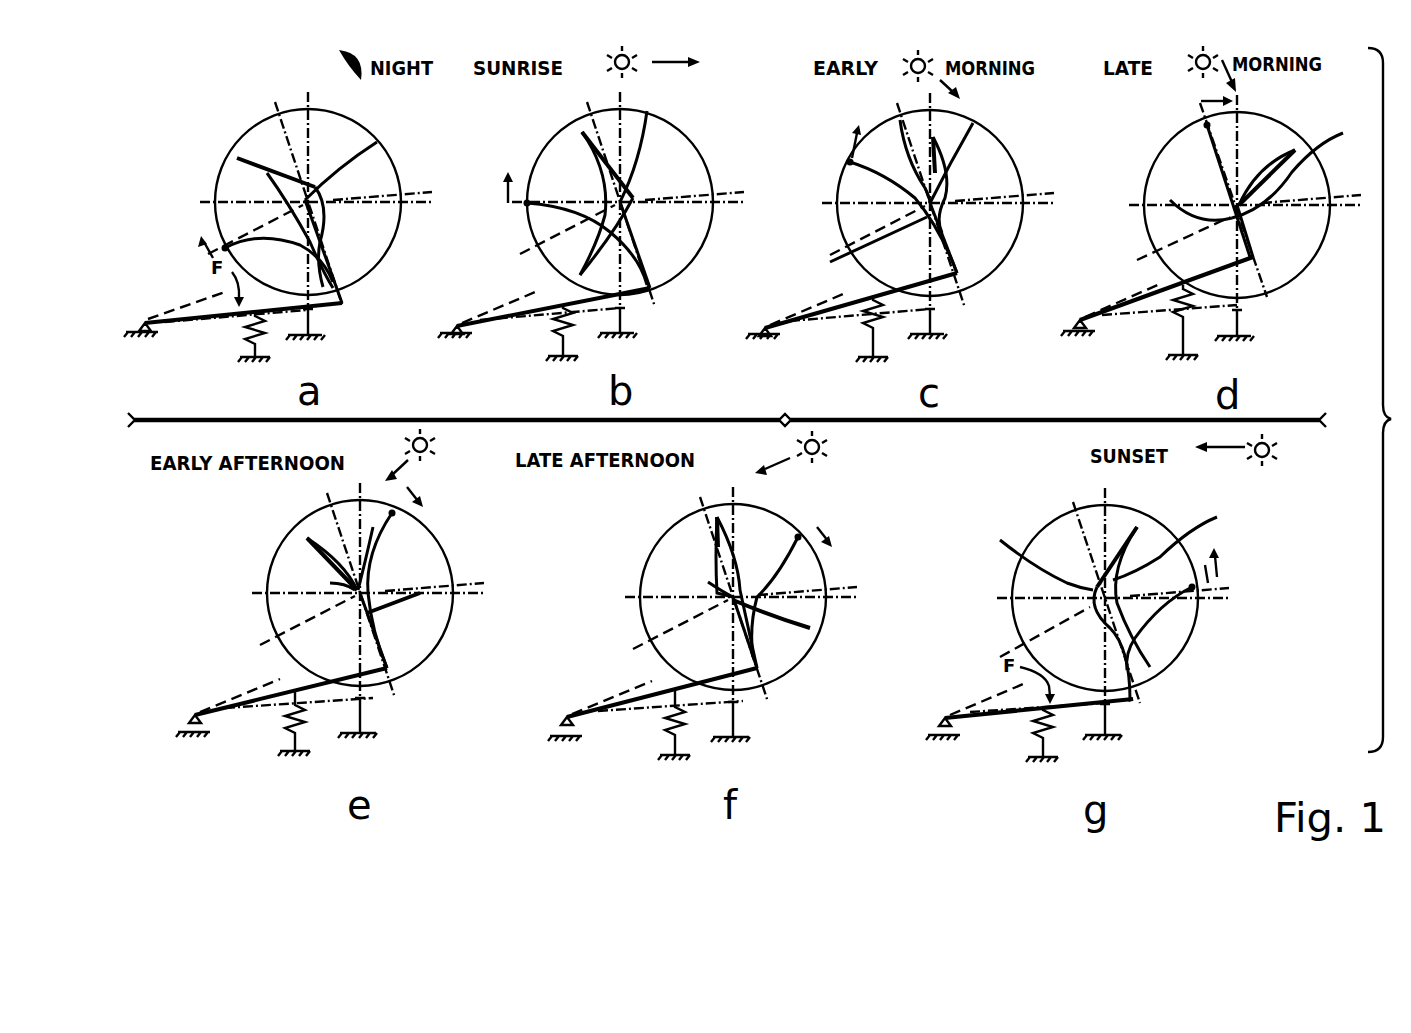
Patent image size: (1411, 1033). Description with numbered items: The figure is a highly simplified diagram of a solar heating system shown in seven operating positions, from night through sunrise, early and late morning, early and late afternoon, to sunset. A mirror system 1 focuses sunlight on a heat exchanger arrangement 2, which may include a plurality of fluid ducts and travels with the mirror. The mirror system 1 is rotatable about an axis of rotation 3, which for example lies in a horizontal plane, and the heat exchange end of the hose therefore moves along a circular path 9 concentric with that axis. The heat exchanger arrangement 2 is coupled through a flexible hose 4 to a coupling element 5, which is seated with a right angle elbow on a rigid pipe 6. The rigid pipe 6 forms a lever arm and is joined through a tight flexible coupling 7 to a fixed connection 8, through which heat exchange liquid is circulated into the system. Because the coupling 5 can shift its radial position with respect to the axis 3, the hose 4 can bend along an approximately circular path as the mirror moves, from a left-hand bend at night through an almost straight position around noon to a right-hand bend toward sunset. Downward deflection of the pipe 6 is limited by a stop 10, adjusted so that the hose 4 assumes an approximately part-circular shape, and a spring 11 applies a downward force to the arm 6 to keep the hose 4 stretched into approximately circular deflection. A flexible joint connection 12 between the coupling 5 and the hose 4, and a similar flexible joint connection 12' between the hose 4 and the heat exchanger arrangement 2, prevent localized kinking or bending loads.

The mirror system 1 is at (748, 352).
The heat exchanger arrangement 2 is at (706, 379).
The axis of rotation 3 is at (784, 335).
The flexible hose 4 is at (734, 413).
The coupling element 5 is at (832, 470).
The rigid pipe 6 is at (699, 527).
The flexible coupling 7 is at (653, 486).
The fixed connection 8 is at (609, 567).
The circular path 9 is at (772, 379).
The stop 10 is at (818, 536).
The spring 11 is at (718, 551).
The flexible joint connection 12 is at (834, 402).
The flexible joint connection 12' is at (708, 339).